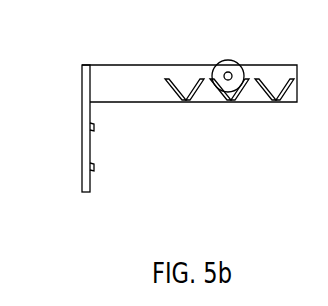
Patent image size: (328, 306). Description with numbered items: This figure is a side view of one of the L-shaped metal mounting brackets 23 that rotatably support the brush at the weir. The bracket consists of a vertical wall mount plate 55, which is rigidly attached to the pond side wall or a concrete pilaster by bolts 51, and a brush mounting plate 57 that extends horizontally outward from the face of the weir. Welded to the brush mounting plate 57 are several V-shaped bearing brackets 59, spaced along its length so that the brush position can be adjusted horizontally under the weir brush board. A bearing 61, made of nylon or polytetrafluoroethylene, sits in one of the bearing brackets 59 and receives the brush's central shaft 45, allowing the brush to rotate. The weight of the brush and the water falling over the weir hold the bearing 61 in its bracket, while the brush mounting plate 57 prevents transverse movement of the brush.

The mounting bracket 23 is at (213, 230).
The central shaft 45 is at (236, 66).
The bolts 51 is at (99, 132).
The wall mount plate 55 is at (73, 175).
The brush mounting plate 57 is at (140, 99).
The V-shaped bearing brackets 59 is at (202, 108).
The bearings 61 is at (219, 52).